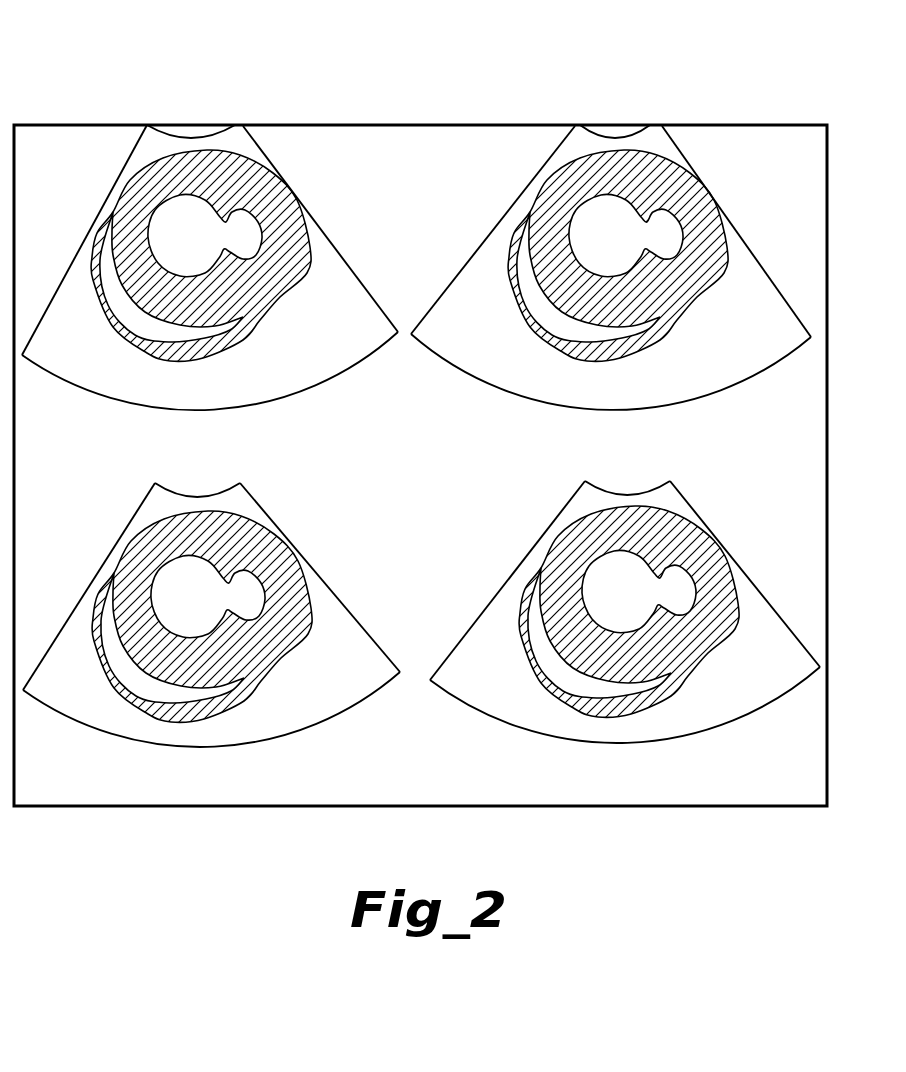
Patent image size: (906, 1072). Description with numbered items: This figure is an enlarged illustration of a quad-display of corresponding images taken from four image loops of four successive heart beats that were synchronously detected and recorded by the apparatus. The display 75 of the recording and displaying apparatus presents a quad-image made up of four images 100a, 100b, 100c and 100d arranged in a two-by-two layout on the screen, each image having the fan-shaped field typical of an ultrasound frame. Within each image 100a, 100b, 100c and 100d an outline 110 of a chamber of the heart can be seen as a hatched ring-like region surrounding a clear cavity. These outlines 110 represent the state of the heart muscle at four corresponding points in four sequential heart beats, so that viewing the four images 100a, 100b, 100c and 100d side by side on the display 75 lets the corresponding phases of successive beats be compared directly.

The display 75 is at (63, 138).
The image 100a is at (316, 229).
The image 100b is at (478, 267).
The image 100c is at (312, 692).
The image 100d is at (740, 688).
The outline of a chamber of the heart 110 is at (197, 268).